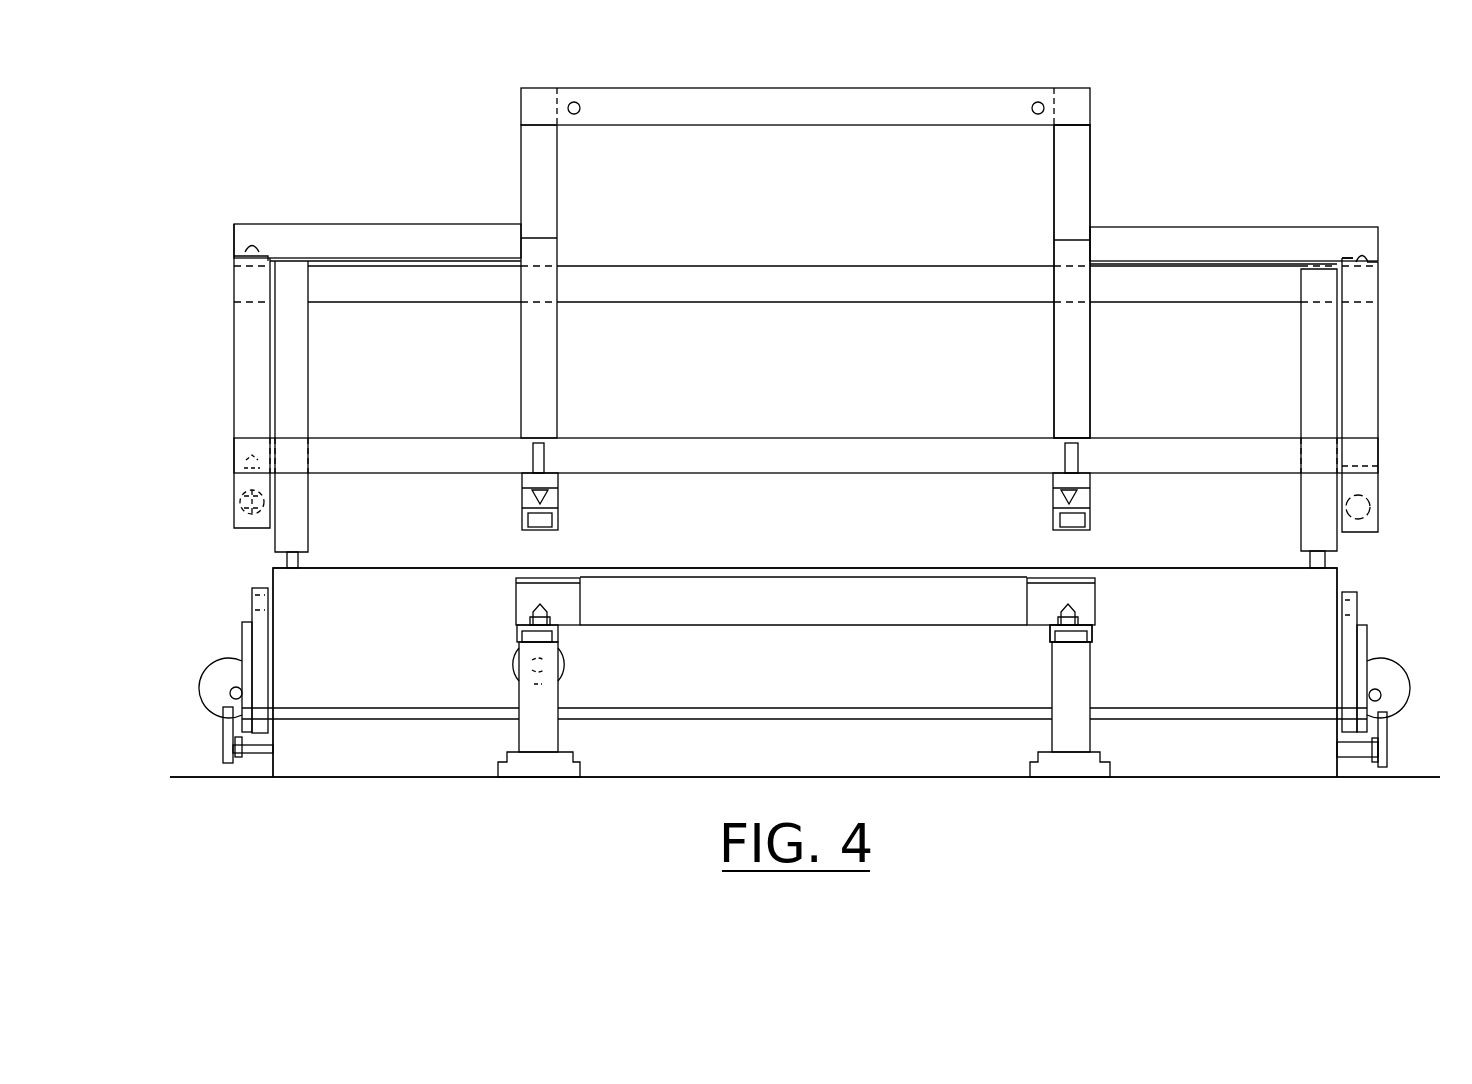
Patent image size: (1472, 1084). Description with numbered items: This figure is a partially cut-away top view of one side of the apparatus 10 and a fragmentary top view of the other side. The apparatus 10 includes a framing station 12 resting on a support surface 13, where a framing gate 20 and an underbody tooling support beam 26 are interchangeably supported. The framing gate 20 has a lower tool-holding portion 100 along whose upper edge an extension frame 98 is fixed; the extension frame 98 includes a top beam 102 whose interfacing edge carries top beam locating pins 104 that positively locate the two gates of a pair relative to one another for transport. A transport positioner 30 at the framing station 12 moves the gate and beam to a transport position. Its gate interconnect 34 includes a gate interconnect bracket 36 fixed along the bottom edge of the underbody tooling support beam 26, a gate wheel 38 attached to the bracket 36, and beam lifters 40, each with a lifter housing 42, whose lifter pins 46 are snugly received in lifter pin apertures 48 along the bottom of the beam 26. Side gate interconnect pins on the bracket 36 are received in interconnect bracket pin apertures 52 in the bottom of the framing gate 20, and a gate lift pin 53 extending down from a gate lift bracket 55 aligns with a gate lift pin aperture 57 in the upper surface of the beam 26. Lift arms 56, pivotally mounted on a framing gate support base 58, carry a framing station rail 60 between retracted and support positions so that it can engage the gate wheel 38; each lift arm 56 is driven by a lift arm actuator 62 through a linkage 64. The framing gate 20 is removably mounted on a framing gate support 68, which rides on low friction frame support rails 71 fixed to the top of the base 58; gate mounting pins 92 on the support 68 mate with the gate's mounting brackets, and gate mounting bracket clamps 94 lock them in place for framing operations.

The apparatus 10 is at (1348, 72).
The framing station 12 is at (1387, 306).
The support surface 13 is at (1404, 776).
The framing gate 20 is at (933, 88).
The underbody tooling support beam 26 is at (800, 615).
The transport positioner 30 is at (516, 508).
The gate interconnect 34 is at (563, 495).
The gate interconnect bracket 36 is at (514, 630).
The gate wheel 38 is at (565, 668).
The beam lifter 40 is at (561, 721).
The lifter housing 42 is at (528, 729).
The lifter pin 46 is at (548, 619).
The lifter pin aperture 48 is at (1050, 643).
The interconnect bracket pin aperture 52 is at (541, 531).
The gate lift pin 53 is at (520, 489).
The gate lift bracket 55 is at (548, 480).
The lift arm 56 is at (242, 653).
The gate lift pin aperture 57 is at (540, 577).
The framing gate support base 58 is at (1320, 589).
The framing station rail 60 is at (1213, 712).
The lift arm actuator 62 is at (222, 680).
The linkage 64 is at (262, 686).
The framing gate support 68 is at (755, 268).
The frame support rail 71 is at (299, 560).
The gate mounting pin 92 is at (260, 248).
The gate mounting bracket clamp 94 is at (234, 258).
The extension frame 98 is at (1085, 173).
The lower tool-holding portion 100 is at (1268, 232).
The top beam 102 is at (1086, 112).
The top beam locating pin 104 is at (580, 103).